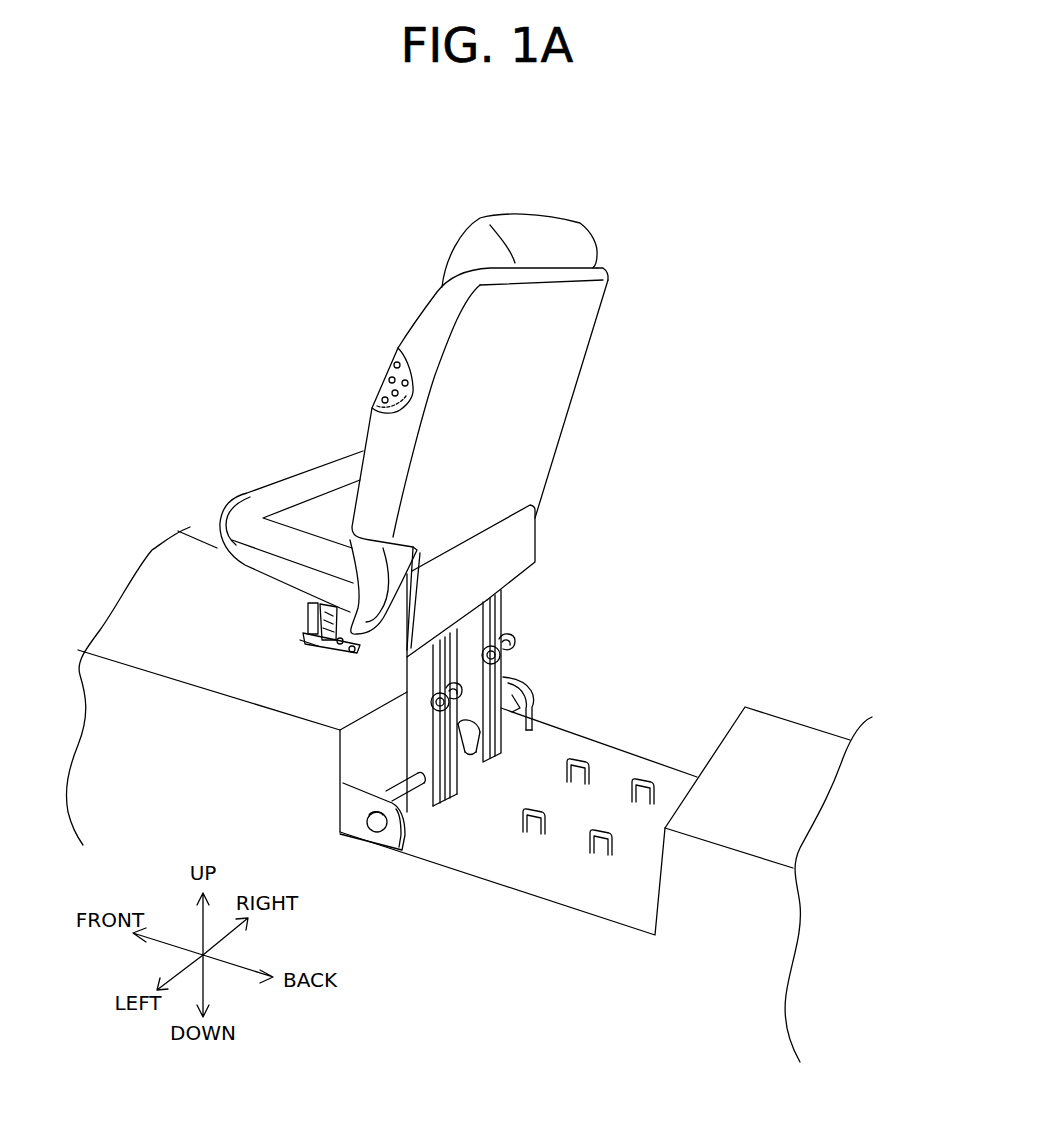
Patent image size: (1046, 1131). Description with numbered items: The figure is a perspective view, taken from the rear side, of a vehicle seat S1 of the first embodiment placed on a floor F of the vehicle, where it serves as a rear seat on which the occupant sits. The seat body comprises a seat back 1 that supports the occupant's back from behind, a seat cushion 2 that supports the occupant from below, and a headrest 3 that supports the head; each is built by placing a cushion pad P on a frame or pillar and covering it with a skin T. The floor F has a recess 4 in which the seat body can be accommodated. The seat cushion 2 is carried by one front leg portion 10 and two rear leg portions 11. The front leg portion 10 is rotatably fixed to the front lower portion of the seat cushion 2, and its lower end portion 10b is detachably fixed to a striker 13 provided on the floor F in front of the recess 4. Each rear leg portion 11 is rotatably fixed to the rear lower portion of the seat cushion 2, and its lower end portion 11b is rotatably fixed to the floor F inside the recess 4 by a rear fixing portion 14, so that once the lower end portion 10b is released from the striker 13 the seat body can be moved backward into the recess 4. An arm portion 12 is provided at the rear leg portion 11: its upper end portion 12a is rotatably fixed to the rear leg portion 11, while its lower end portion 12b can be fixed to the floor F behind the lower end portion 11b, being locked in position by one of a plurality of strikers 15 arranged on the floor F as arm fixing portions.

The seat back 1 is at (537, 358).
The seat cushion 2 is at (253, 507).
The headrest 3 is at (546, 243).
The recess 4 is at (687, 756).
The front leg portion 10 is at (305, 622).
The lower end portion 10b is at (317, 648).
The rear leg portion 11 is at (344, 721).
The lower end portion 11b is at (463, 757).
The arm portion 12 is at (460, 755).
The upper end portion 12a is at (513, 648).
The lower end portion 12b is at (500, 753).
The striker 13 is at (337, 653).
The rear fixing portion 14 is at (357, 827).
The striker 15 is at (527, 822).
The floor F is at (803, 767).
The cushion pad P is at (373, 397).
The vehicle seat S1 is at (648, 206).
The skin T is at (393, 365).